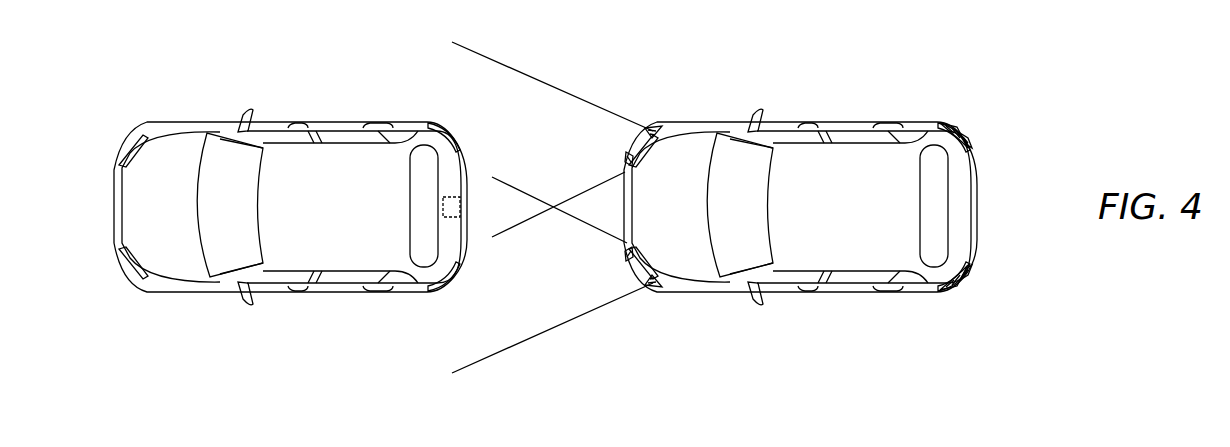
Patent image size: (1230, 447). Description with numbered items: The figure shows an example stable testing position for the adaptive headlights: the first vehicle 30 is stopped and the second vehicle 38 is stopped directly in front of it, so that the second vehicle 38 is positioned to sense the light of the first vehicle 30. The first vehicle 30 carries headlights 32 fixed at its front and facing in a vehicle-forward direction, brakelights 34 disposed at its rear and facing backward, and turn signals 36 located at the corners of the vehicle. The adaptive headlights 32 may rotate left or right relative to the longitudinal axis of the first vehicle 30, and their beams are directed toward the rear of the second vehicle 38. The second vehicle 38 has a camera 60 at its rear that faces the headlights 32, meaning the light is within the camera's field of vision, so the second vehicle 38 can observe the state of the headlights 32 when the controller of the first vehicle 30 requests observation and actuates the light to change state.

The first vehicle 30 is at (849, 117).
The headlights 32 is at (630, 158).
The brakelights 34 is at (966, 140).
The turn signals 36 is at (650, 130).
The second vehicle 38 is at (321, 117).
The camera 60 is at (460, 217).